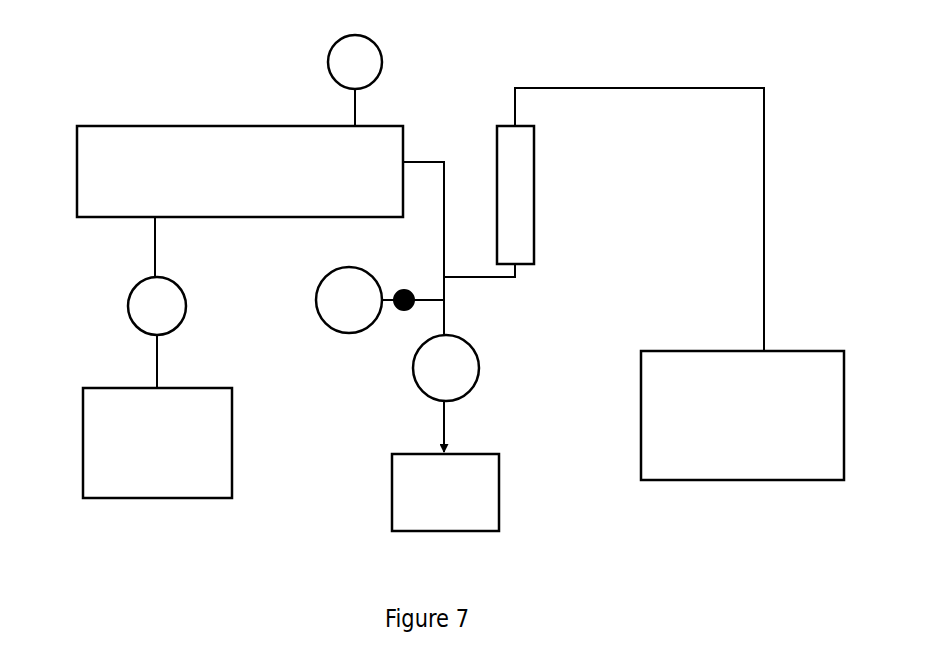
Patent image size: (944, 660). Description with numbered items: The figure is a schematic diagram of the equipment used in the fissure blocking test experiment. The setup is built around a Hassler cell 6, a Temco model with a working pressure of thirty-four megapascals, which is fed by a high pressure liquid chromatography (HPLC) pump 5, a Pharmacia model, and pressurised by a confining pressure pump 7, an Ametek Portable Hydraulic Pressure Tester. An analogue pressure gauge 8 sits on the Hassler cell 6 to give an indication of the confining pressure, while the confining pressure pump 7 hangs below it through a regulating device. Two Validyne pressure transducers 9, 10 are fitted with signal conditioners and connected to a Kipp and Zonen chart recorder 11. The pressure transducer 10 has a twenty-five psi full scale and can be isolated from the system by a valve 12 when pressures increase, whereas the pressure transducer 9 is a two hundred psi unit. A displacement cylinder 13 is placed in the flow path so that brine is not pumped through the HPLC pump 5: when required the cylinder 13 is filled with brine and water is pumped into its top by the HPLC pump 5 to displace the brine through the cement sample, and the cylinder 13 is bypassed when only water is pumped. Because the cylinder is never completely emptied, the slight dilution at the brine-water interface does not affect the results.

The high pressure liquid chromatography (HPLC) pump 5 is at (802, 348).
The Hassler cell 6 is at (76, 165).
The confining pressure pump 7 is at (80, 418).
The analogue pressure gauge 8 is at (330, 60).
The pressure transducer 9 is at (481, 378).
The pressure transducer 10 is at (333, 327).
The chart recorder 11 is at (502, 488).
The valve 12 is at (401, 313).
The displacement cylinder 13 is at (493, 133).